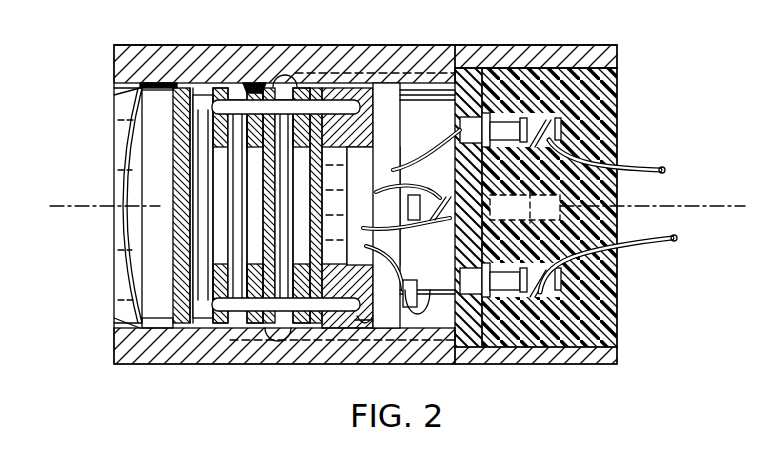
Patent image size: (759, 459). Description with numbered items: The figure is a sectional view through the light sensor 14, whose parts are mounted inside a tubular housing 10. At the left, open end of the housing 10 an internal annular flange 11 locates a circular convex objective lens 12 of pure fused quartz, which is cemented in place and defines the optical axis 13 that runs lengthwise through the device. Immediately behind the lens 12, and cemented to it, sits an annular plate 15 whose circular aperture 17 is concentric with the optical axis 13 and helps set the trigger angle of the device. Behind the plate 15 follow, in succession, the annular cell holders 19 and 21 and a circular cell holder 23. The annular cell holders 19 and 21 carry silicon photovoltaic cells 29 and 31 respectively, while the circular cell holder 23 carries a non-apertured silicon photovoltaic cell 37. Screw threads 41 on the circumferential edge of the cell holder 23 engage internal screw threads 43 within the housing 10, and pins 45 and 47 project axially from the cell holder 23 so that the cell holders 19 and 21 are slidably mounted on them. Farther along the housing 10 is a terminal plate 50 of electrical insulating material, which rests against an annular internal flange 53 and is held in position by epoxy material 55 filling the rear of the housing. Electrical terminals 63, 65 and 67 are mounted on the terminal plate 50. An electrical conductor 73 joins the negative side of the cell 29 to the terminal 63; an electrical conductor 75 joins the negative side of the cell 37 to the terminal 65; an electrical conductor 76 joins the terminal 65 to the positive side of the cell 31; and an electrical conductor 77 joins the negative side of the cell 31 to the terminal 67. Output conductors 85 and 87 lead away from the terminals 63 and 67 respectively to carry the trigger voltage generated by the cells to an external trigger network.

The tubular housing 10 is at (356, 52).
The internal annular flange 11 is at (128, 88).
The circular convex objective lens 12 is at (133, 158).
The optical axis 13 is at (80, 212).
The light sensor 14 is at (412, 46).
The annular plate 15 is at (188, 86).
The circular aperture 17 is at (174, 258).
The annular cell holder 19 is at (220, 86).
The annular cell holder 21 is at (254, 88).
The circular cell holder 23 is at (318, 92).
The silicon photovoltaic cell 29 is at (210, 160).
The silicon photovoltaic cell 31 is at (252, 160).
The non-apertured silicon photovoltaic cell 37 is at (305, 162).
The screw threads 41 is at (358, 320).
The internal screw threads 43 is at (310, 352).
The pin 45 is at (278, 108).
The pin 47 is at (236, 312).
The terminal plate 50 is at (481, 68).
The annular internal flange 53 is at (463, 68).
The epoxy material 55 is at (588, 95).
The electrical terminal 63 is at (562, 310).
The electrical terminal 65 is at (560, 206).
The electrical terminal 67 is at (562, 128).
The electrical conductor 73 is at (405, 262).
The electrical conductor 75 is at (388, 222).
The electrical conductor 76 is at (388, 190).
The electrical conductor 77 is at (393, 168).
The output conductor 85 is at (647, 247).
The output conductor 87 is at (645, 152).